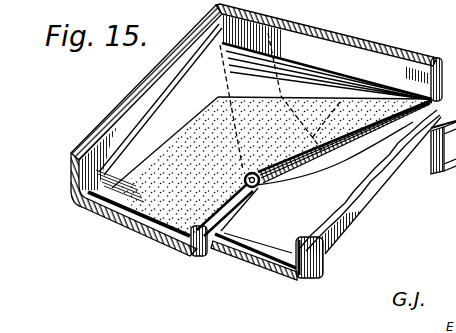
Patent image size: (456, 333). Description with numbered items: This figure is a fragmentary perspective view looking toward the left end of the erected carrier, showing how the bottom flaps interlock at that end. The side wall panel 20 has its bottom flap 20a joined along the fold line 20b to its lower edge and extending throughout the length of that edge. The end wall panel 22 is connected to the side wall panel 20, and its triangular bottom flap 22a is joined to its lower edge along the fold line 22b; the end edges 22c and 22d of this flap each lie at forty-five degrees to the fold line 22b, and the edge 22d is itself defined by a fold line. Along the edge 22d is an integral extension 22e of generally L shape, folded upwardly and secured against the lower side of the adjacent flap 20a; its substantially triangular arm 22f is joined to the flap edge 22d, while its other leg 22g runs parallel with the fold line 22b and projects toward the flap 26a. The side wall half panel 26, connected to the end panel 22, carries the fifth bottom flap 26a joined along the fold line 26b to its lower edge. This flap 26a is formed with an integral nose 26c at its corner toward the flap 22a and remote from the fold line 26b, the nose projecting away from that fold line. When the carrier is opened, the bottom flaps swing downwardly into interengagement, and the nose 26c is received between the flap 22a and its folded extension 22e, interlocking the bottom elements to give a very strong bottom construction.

The side wall panel 20 is at (346, 214).
The bottom flap 20a is at (265, 243).
The fold line 20b is at (326, 256).
The end wall panel 22 is at (354, 53).
The bottom flap 22a is at (325, 78).
The fold line 22b is at (371, 80).
The end edge 22c is at (221, 82).
The end edge 22d is at (306, 170).
The extension 22e is at (163, 143).
The arm 22f is at (394, 165).
The leg 22g is at (160, 231).
The side wall half panel 26 is at (137, 107).
The bottom flap 26a is at (108, 213).
The fold line 26b is at (76, 176).
The nose 26c is at (311, 97).